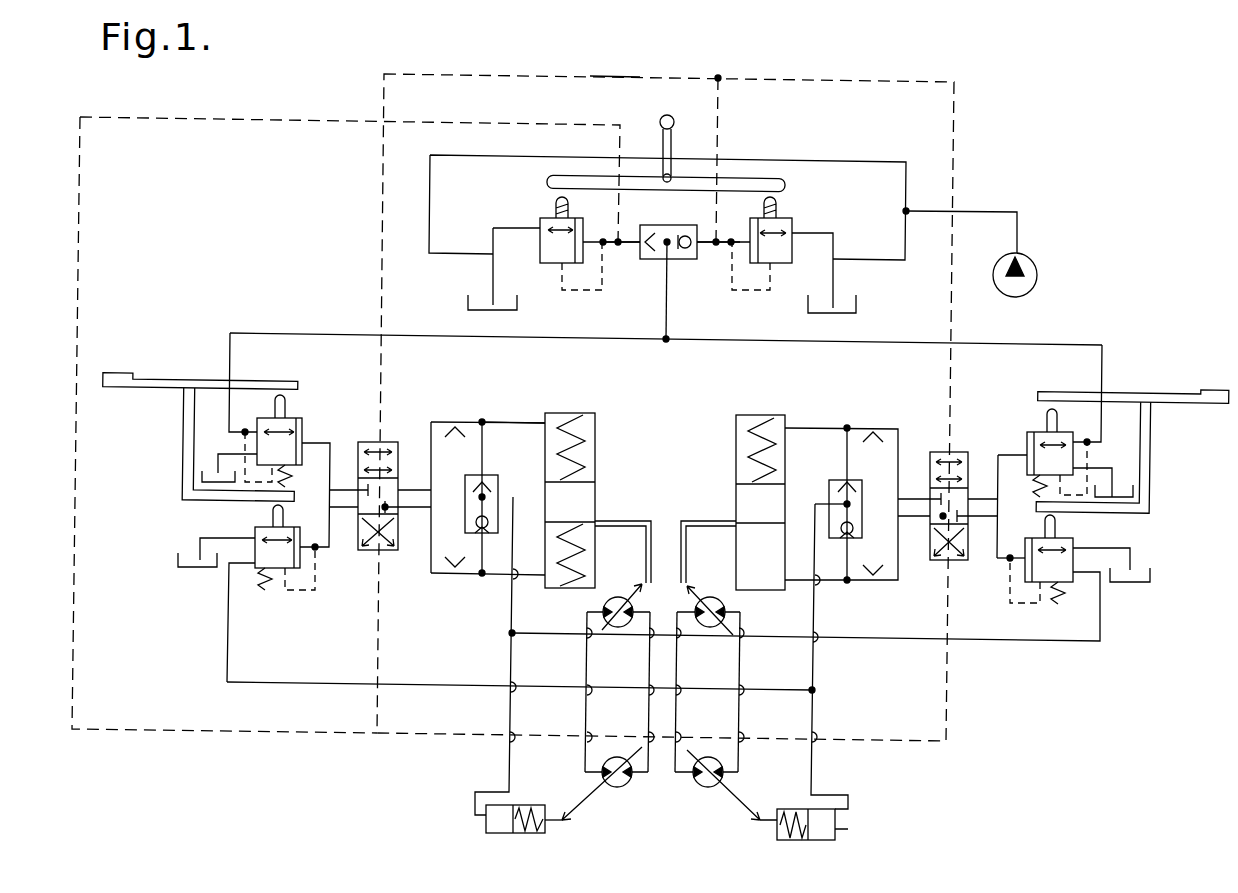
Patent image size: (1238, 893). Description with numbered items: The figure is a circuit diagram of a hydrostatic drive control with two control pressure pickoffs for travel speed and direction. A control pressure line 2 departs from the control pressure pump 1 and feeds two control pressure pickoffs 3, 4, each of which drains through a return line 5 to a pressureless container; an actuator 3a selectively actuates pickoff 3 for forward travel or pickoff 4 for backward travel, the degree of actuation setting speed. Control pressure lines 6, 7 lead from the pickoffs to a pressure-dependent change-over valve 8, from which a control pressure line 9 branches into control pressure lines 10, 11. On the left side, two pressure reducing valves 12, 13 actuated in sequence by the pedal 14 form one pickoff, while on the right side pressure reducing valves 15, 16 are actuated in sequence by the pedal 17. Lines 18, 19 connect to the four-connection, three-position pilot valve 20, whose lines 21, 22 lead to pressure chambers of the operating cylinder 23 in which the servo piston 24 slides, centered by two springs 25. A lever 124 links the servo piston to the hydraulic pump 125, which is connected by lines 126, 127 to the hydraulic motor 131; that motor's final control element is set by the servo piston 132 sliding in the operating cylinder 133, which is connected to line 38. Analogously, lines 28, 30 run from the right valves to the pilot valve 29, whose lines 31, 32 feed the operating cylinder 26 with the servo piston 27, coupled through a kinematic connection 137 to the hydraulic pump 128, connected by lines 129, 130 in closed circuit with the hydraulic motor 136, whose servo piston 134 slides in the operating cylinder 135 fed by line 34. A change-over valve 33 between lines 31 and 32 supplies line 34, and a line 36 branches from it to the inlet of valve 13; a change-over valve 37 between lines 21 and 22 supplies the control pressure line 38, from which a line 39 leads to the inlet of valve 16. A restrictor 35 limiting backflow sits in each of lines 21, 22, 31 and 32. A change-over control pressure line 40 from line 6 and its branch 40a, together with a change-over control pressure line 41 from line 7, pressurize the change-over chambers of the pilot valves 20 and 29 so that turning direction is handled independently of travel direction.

The control pressure pump 1 is at (1036, 266).
The control pressure line 2 is at (982, 211).
The control pressure pickoff 3 is at (783, 216).
The actuator 3a is at (661, 118).
The control pressure pickoff 4 is at (546, 214).
The return line 5 is at (491, 283).
The control pressure line 6 is at (701, 246).
The control pressure line 7 is at (633, 246).
The change-over valve 8 is at (665, 225).
The control pressure line 9 is at (666, 303).
The control pressure line 10 is at (315, 333).
The control pressure line 11 is at (1028, 345).
The pressure reducing valve 12 is at (305, 418).
The pressure reducing valve 13 is at (255, 531).
The pedal 14 is at (124, 376).
The pressure reducing valve 15 is at (1027, 432).
The pressure reducing valve 16 is at (1074, 542).
The pedal 17 is at (1197, 393).
The line 18 is at (331, 440).
The line 19 is at (332, 552).
The pilot valve 20 is at (400, 442).
The line 21 is at (512, 420).
The line 22 is at (430, 566).
The operating cylinder 23 is at (585, 412).
The servo piston 24 is at (597, 503).
The spring 25 is at (597, 452).
The operating cylinder 26 is at (735, 452).
The servo piston 27 is at (735, 501).
The line 28 is at (998, 455).
The pilot valve 29 is at (933, 452).
The line 30 is at (997, 560).
The line 31 is at (790, 428).
The line 32 is at (900, 574).
The change-over valve 33 is at (829, 490).
The line 34 is at (814, 778).
The restrictor 35 is at (460, 413).
The line 36 is at (318, 683).
The change-over valve 37 is at (499, 485).
The control pressure line 38 is at (512, 776).
The line 39 is at (990, 644).
The change-over control pressure line 40 is at (770, 78).
The change-over control pressure line 40a is at (593, 77).
The change-over control pressure line 41 is at (479, 123).
The lever 124 is at (655, 520).
The hydraulic pump 125 is at (603, 607).
The line 126 is at (580, 660).
The line 127 is at (648, 660).
The hydraulic pump 128 is at (725, 607).
The line 129 is at (680, 660).
The line 130 is at (745, 660).
The hydraulic motor 131 is at (620, 789).
The servo piston 132 is at (536, 834).
The operating cylinder 133 is at (486, 819).
The servo piston 134 is at (790, 840).
The operating cylinder 135 is at (849, 829).
The hydraulic motor 136 is at (710, 789).
The kinematic connection 137 is at (683, 562).